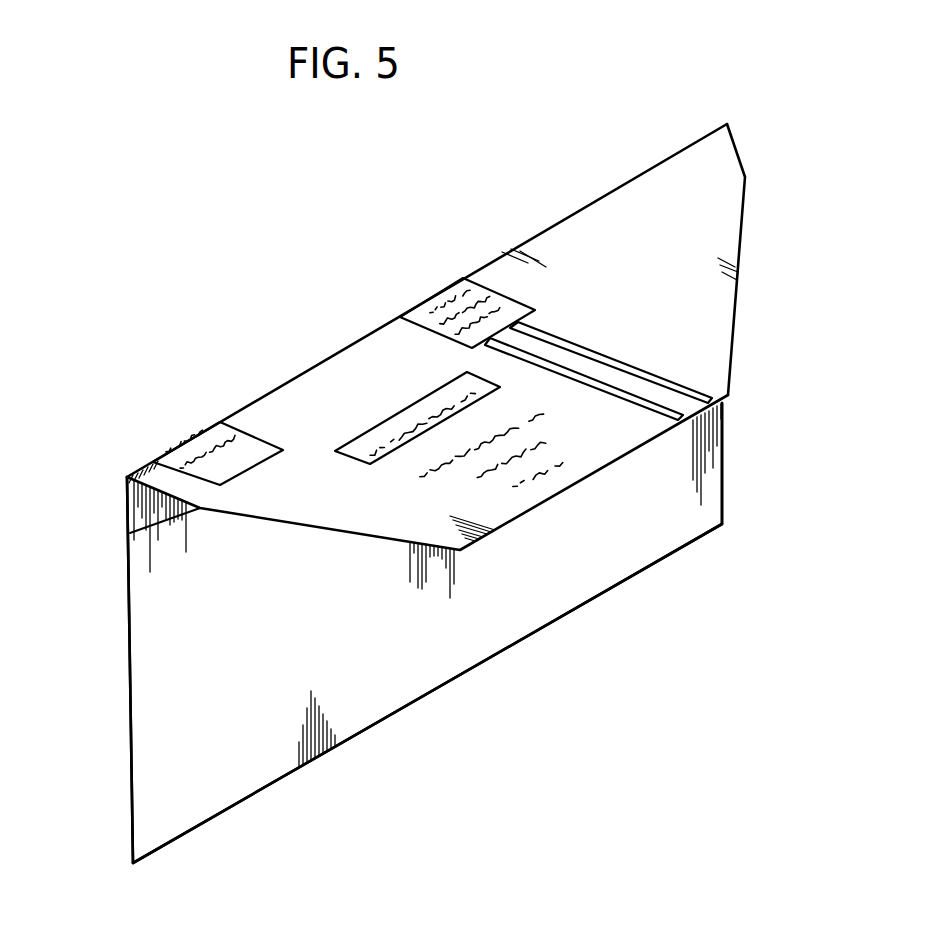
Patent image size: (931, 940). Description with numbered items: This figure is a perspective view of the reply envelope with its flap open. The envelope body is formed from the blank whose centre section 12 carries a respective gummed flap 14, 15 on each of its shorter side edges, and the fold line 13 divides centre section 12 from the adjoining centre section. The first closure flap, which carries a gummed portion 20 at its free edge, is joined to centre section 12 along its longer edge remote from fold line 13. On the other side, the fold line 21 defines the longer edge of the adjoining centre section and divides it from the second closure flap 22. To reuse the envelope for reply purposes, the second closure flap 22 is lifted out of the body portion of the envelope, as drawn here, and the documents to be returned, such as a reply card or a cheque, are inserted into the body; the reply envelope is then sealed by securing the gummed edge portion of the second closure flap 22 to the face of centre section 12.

The centre section 12 is at (642, 553).
The fold line 13 is at (262, 788).
The gummed flap 14 is at (723, 490).
The gummed flap 15 is at (130, 737).
The gummed portion 20 is at (142, 517).
The fold line 21 is at (545, 230).
The second closure flap 22 is at (718, 302).